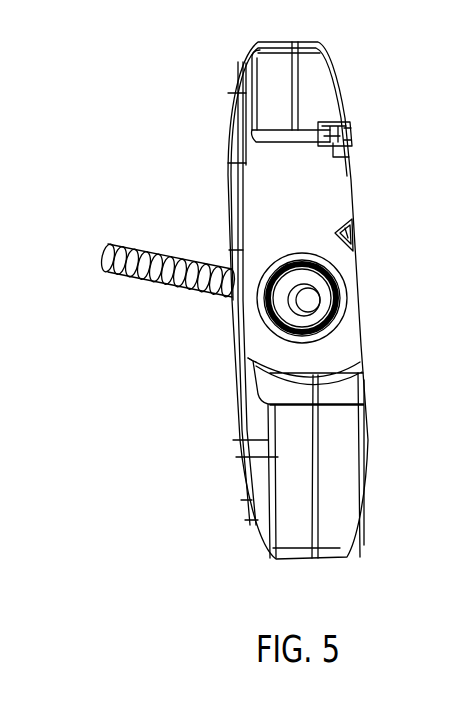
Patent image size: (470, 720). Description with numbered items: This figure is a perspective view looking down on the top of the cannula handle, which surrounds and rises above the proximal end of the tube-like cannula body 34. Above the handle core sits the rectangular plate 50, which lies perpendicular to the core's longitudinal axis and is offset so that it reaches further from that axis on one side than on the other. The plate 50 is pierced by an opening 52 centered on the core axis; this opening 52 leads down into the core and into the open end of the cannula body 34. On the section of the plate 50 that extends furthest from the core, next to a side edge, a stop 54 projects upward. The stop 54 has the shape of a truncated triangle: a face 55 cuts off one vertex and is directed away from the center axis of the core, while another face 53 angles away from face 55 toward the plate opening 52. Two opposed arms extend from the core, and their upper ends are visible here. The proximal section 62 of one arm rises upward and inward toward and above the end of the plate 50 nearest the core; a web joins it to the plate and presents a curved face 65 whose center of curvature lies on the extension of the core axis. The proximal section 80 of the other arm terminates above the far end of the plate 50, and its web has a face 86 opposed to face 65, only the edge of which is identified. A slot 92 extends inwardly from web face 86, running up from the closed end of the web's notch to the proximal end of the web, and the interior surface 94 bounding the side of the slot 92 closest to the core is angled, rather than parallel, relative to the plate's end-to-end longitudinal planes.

The cannula body 34 is at (113, 273).
The rectangular plate 50 is at (299, 199).
The opening 52 is at (265, 300).
The face of stop 53 is at (335, 233).
The stop 54 is at (350, 240).
The face of stop 55 is at (350, 223).
The arm proximal section 62 is at (290, 508).
The curved face of web 65 is at (350, 354).
The arm proximal section 80 is at (282, 102).
The web face 86 is at (270, 145).
The slot 92 is at (350, 137).
The interior surface 94 is at (345, 120).